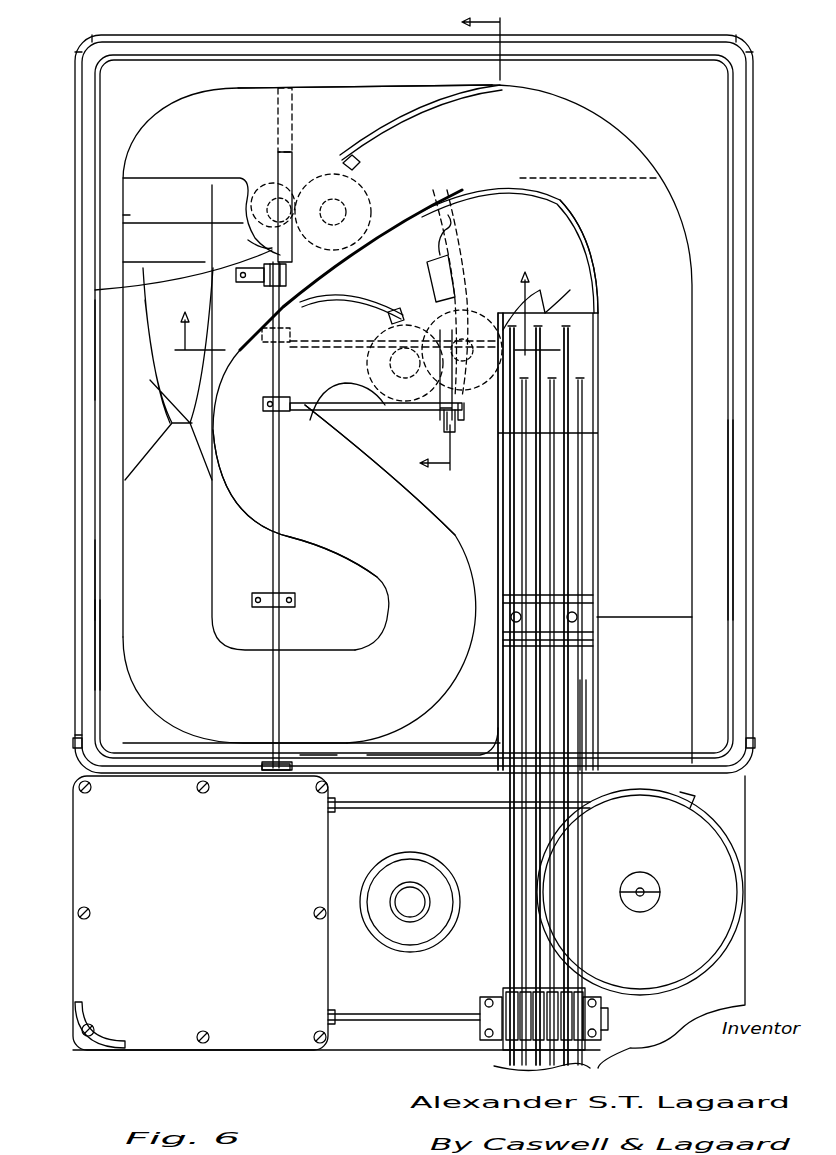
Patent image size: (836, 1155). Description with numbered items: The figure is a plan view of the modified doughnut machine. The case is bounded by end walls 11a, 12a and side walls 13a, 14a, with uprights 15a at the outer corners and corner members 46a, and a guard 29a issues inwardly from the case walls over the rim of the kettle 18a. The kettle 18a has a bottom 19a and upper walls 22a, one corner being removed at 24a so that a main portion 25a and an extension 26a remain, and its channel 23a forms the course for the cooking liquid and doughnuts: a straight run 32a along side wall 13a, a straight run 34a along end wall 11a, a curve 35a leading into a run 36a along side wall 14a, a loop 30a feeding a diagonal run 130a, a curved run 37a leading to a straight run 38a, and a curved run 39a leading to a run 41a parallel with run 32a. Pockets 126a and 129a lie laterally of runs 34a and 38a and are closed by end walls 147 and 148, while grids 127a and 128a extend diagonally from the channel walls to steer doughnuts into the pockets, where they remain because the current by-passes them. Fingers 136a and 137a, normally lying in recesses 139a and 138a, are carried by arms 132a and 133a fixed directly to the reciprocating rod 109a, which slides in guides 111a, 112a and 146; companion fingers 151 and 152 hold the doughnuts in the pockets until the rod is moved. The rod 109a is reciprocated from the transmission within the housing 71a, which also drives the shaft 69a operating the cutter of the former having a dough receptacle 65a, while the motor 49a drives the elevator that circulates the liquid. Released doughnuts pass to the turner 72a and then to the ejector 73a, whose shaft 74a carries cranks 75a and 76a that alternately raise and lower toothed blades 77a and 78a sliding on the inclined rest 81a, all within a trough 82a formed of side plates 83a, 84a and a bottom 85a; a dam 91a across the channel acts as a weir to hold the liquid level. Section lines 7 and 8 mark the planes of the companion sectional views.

The end wall 11a is at (616, 55).
The upright 15a is at (78, 42).
The corner bracket 46a is at (73, 744).
The side wall 13a is at (748, 522).
The main portion 25a is at (710, 488).
The guard 29a is at (98, 341).
The side wall 14a is at (133, 582).
The curve 35a is at (170, 122).
The straight run 34a is at (380, 98).
The straight run 32a is at (672, 408).
The channel 23a is at (150, 670).
The loop 30a is at (418, 693).
The diagonal run 130a is at (430, 530).
The bottom 19a is at (195, 598).
The upper wall 22a is at (372, 568).
The curved run 37a is at (238, 452).
The pocket 126a is at (340, 266).
The straight run 38a is at (408, 240).
The curved run 39a is at (560, 222).
The grid 127a is at (412, 102).
The end wall 147 is at (243, 218).
The straight run 36a is at (133, 223).
The finger 136a is at (265, 250).
The arm 132a is at (200, 283).
The turner 72a is at (130, 435).
The section line 7 is at (367, 304).
The section line 8 is at (449, 243).
The reciprocating rod 109a is at (276, 566).
The finger 151 is at (280, 152).
The guide 146 is at (268, 284).
The grid 128a is at (350, 300).
The recess 139a is at (295, 343).
The pocket 129a is at (388, 390).
The recess 138a is at (428, 405).
The finger 137a is at (452, 420).
The arm 133a is at (337, 415).
The finger 152 is at (446, 268).
The end wall 148 is at (556, 335).
The guide 112a is at (257, 607).
The guide 111a is at (282, 764).
The removed corner 24a is at (182, 743).
The extension 26a is at (120, 652).
The cooking kettle 18a is at (122, 660).
The straight run 41a is at (598, 297).
The ejector 73a is at (560, 506).
The toothed blades 77a is at (555, 480).
The toothed blades 78a is at (520, 355).
The inclined rest 81a is at (580, 332).
The dam 91a is at (545, 605).
The trough 82a is at (497, 585).
The side plate 83a is at (497, 726).
The side plate 84a is at (588, 705).
The bottom 85a is at (580, 745).
The transmission housing 71a is at (78, 810).
The end wall 12a is at (345, 1051).
The shaft 69a is at (405, 808).
The motor 49a is at (445, 888).
The shaft 74a is at (403, 1016).
The crank 75a is at (515, 990).
The crank 76a is at (500, 1062).
The receptacle 65a is at (730, 838).